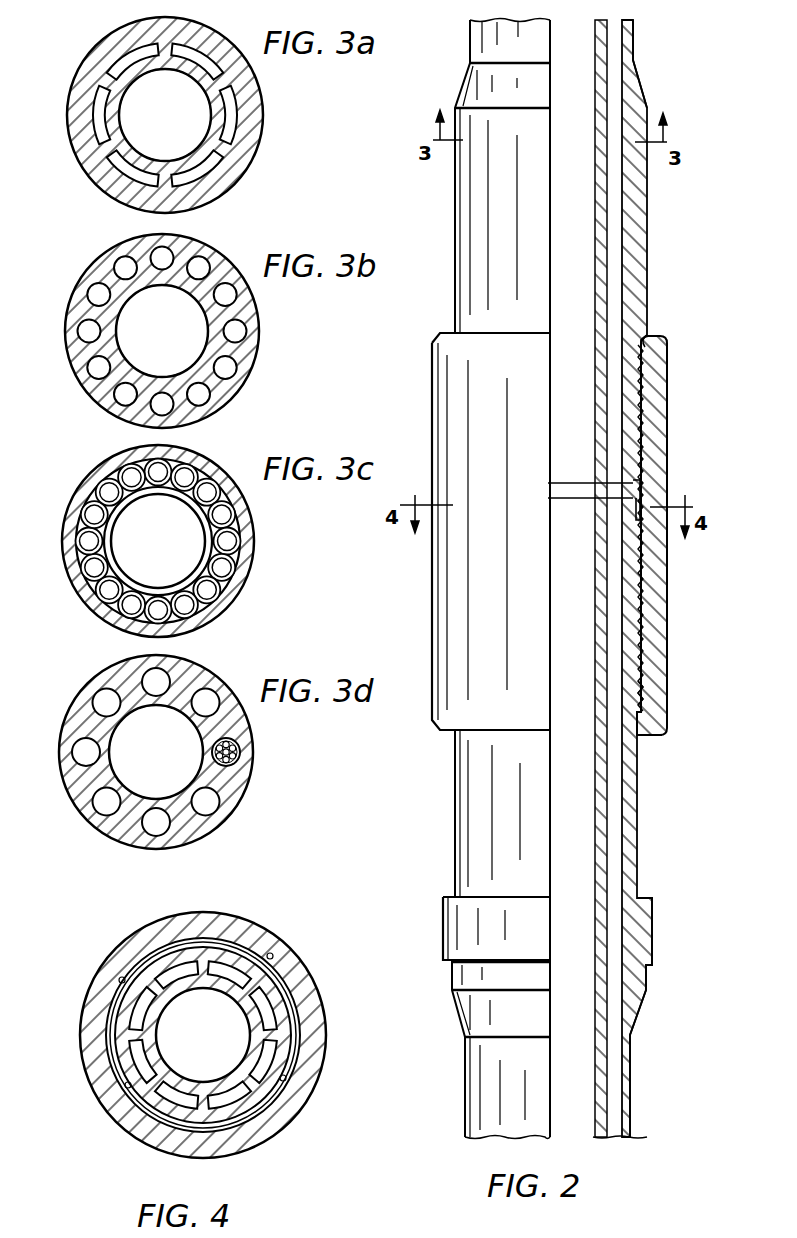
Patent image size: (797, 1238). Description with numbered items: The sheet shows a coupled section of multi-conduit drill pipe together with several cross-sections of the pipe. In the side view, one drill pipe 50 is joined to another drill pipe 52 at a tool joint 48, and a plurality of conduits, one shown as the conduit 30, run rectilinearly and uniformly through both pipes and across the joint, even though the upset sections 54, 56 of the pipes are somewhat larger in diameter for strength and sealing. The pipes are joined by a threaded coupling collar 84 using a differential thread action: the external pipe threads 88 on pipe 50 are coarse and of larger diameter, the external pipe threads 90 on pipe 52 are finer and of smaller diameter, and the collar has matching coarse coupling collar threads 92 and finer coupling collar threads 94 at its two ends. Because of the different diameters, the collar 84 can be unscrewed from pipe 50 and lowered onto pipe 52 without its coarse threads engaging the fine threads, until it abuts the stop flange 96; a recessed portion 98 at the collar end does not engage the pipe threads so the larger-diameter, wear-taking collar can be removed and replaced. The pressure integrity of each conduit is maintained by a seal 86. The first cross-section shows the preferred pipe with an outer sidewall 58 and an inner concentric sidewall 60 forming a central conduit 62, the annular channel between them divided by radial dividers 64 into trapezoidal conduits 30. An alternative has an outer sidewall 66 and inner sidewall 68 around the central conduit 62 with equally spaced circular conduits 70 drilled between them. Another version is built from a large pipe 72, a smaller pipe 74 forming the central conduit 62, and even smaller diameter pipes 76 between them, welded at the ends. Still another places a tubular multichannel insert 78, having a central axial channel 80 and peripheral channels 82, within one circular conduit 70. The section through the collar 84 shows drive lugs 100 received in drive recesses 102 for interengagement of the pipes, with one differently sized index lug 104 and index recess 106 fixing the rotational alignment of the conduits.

In FIG. 3A, the conduit 30 is at (228, 100).
In FIG. 2, the conduit 30 is at (630, 217).
In FIG. 2, the tool joint 48 is at (718, 492).
In FIG. 2, the drill pipe 50 is at (634, 45).
In FIG. 2, the drill pipe 52 is at (631, 1080).
In FIG. 2, the upset section 54 is at (454, 205).
In FIG. 2, the upset section 56 is at (451, 975).
In FIG. 3A, the outer sidewall 58 is at (86, 63).
In FIG. 3A, the inner sidewall 60 is at (186, 76).
In FIG. 3A, the central conduit 62 is at (176, 142).
In FIG. 3B, the central conduit 62 is at (175, 356).
In FIG. 3C, the central conduit 62 is at (171, 544).
In FIG. 3D, the central conduit 62 is at (170, 778).
In FIG. 4, the central conduit 62 is at (216, 1031).
In FIG. 3A, the radial divider 64 is at (217, 150).
In FIG. 3B, the outer sidewall 66 is at (83, 276).
In FIG. 3B, the inner sidewall 68 is at (183, 293).
In FIG. 3D, the inner sidewall 68 is at (180, 712).
In FIG. 3B, the circular conduit 70 is at (246, 333).
In FIG. 3D, the circular conduit 70 is at (97, 693).
In FIG. 3C, the large pipe 72 is at (85, 478).
In FIG. 3C, the smaller pipe 74 is at (210, 567).
In FIG. 3C, the smaller diameter pipe 76 is at (229, 528).
In FIG. 3D, the tubular multichannel insert 78 is at (236, 742).
In FIG. 3D, the central axial channel 80 is at (236, 760).
In FIG. 3D, the peripheral channel 82 is at (233, 768).
In FIG. 4, the coupling collar 84 is at (323, 1050).
In FIG. 2, the coupling collar 84 is at (431, 400).
In FIG. 2, the seal 86 is at (620, 490).
In FIG. 2, the external pipe threads 88 is at (645, 331).
In FIG. 2, the external pipe threads 90 is at (642, 688).
In FIG. 2, the coupling collar threads 92 is at (647, 367).
In FIG. 2, the coupling collar threads 94 is at (642, 660).
In FIG. 2, the stop flange 96 is at (442, 922).
In FIG. 2, the recessed portion 98 is at (634, 736).
In FIG. 4, the drive lug 100 is at (120, 978).
In FIG. 4, the drive recess 102 is at (150, 950).
In FIG. 4, the index lug 104 is at (280, 1108).
In FIG. 4, the index recess 106 is at (283, 1078).